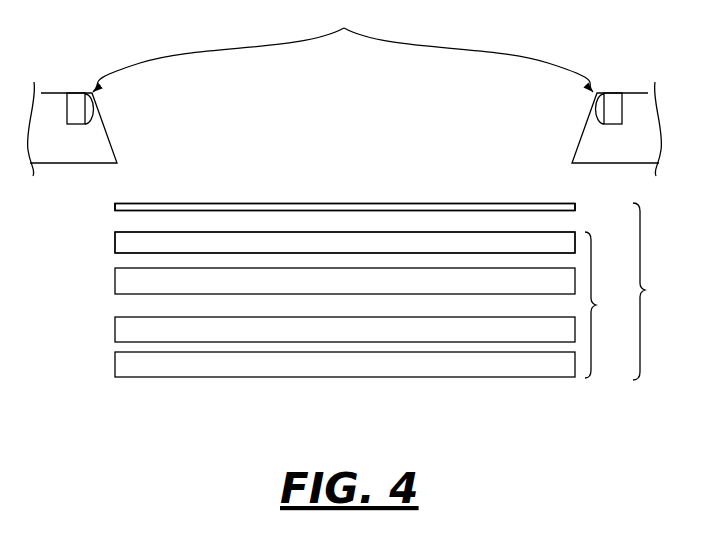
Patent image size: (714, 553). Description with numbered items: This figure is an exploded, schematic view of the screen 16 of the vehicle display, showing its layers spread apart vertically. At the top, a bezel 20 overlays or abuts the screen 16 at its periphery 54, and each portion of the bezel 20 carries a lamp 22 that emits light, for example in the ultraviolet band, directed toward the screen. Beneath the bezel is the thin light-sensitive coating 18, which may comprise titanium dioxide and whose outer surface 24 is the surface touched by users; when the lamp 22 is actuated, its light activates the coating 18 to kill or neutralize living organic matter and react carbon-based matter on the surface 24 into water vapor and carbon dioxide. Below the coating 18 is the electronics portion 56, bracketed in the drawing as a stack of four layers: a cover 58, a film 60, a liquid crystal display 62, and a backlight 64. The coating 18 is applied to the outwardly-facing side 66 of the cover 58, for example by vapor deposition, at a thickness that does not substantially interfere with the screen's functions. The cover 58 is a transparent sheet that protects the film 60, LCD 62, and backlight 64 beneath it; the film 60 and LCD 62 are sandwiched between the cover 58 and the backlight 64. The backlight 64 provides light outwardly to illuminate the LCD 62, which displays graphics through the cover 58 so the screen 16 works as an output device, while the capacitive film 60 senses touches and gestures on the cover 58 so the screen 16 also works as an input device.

The screen 16 is at (655, 291).
The light-sensitive coating 18 is at (115, 205).
The bezel 20 is at (107, 132).
The lamp 22 is at (343, 48).
The surface 24 is at (355, 204).
The periphery 54 is at (120, 200).
The electronics portion 56 is at (606, 305).
The cover 58 is at (115, 241).
The film 60 is at (115, 276).
The liquid crystal display 62 is at (115, 323).
The backlight 64 is at (115, 358).
The outwardly-facing side 66 is at (262, 232).